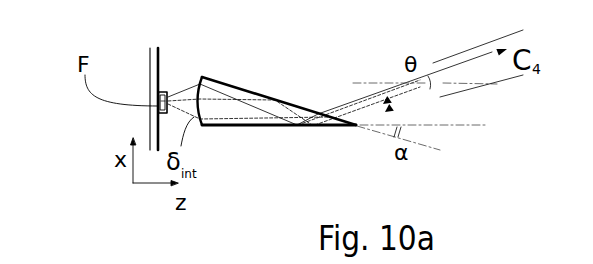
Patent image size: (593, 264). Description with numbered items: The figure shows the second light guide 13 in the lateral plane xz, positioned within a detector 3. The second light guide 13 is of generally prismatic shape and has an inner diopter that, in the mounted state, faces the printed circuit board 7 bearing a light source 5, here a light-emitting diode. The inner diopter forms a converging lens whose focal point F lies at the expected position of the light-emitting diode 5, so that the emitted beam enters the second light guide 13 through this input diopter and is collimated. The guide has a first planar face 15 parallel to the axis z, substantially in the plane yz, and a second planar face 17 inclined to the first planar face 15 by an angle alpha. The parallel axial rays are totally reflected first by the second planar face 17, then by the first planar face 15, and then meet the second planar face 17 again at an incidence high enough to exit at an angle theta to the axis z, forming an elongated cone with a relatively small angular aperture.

The detector 3 is at (367, 27).
The light source 5 is at (160, 88).
The printed circuit board 7 is at (148, 72).
The second light guide 13 is at (277, 107).
The first planar face 15 is at (282, 127).
The second planar face 17 is at (253, 92).